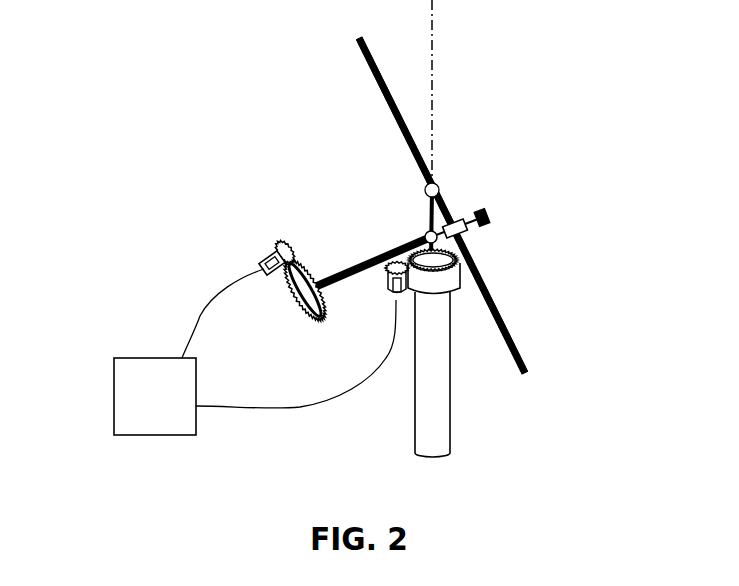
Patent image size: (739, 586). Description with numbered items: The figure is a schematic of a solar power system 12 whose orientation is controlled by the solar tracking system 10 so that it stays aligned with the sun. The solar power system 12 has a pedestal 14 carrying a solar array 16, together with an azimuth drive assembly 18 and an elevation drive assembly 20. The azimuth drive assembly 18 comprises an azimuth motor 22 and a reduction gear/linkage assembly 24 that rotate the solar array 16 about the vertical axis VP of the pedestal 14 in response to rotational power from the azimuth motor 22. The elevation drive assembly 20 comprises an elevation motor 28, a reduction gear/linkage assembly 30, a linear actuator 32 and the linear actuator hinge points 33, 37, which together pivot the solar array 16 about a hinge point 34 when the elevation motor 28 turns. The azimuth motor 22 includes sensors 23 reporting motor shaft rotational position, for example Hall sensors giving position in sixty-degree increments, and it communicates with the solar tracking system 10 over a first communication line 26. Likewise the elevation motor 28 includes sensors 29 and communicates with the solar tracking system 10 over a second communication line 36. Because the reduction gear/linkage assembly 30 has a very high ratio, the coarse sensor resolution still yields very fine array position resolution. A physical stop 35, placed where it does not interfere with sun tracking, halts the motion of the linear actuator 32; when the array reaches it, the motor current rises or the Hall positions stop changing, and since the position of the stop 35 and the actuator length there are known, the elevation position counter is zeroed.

The solar tracking system 10 is at (113, 392).
The solar power system 12 is at (567, 96).
The pedestal 14 is at (413, 427).
The solar array 16 is at (385, 70).
The azimuth drive assembly 18 is at (462, 300).
The elevation drive assembly 20 is at (182, 230).
The azimuth motor 22 is at (386, 283).
The sensors 23 is at (388, 296).
The reduction gear/linkage assembly 24 is at (415, 256).
The first communication line 26 is at (255, 400).
The elevation motor 28 is at (272, 241).
The sensors 29 is at (262, 258).
The reduction gear/linkage assembly 30 is at (292, 299).
The linear actuator 32 is at (339, 262).
The linear actuator hinge point 33 is at (425, 233).
The hinge point 34 is at (426, 187).
The physical stop 35 is at (490, 210).
The second communication line 36 is at (200, 326).
The linear actuator hinge point 37 is at (464, 228).
The vertical axis VP is at (443, 58).